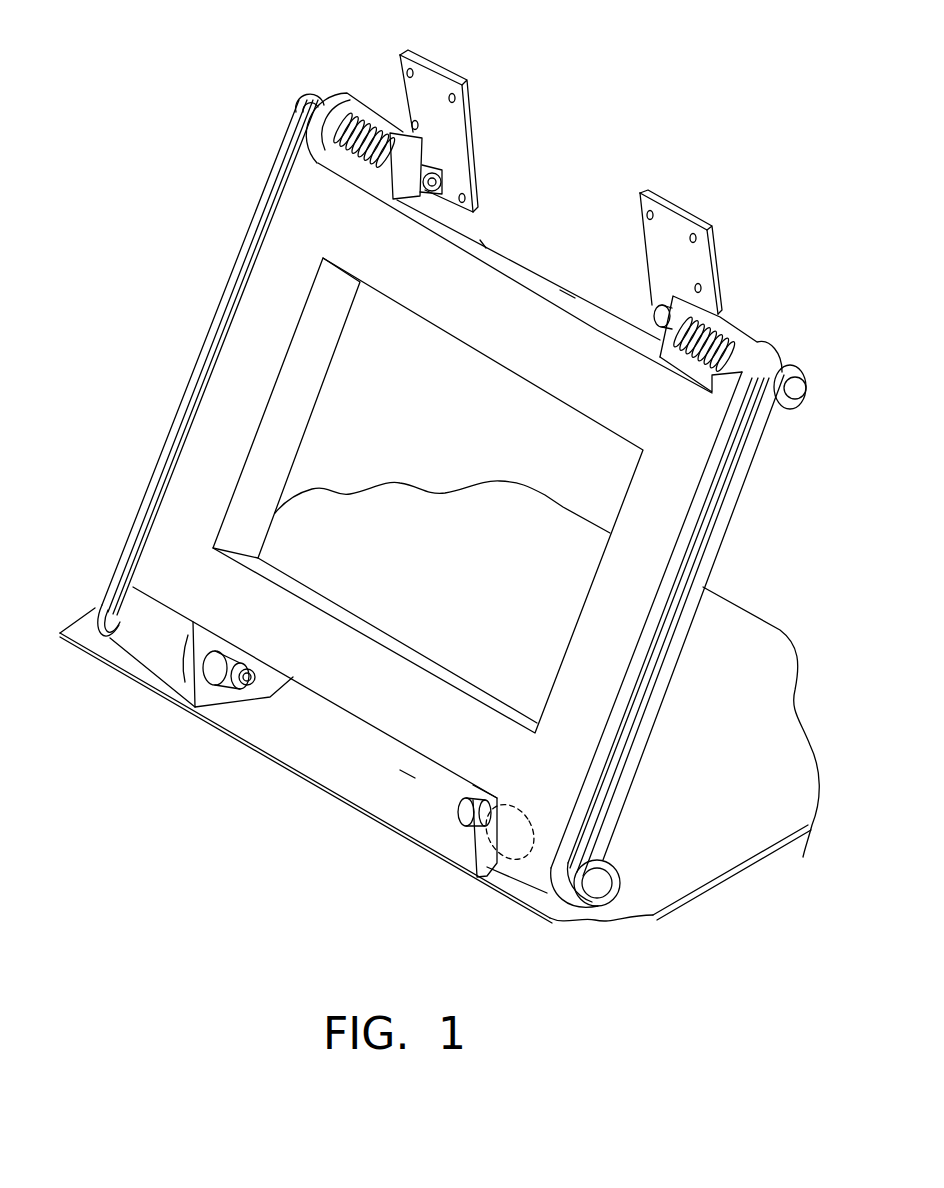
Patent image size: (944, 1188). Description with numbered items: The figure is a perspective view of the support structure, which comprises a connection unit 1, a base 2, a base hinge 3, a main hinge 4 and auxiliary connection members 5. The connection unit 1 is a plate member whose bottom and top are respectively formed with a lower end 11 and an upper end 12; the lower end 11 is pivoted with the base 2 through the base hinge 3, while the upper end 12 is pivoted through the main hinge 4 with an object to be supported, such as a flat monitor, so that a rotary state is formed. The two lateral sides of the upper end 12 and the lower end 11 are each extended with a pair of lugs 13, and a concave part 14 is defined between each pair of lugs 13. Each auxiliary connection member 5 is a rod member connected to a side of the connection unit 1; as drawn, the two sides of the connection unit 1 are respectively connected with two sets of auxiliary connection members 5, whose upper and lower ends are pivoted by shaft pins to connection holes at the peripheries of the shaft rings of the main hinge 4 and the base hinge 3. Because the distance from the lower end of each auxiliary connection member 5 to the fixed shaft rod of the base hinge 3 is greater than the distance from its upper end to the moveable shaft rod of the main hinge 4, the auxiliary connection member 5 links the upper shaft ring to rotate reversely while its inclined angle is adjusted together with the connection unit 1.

The connection unit 1 is at (247, 356).
The base 2 is at (355, 778).
The base hinge 3 is at (243, 697).
The main hinge 4 is at (387, 125).
The auxiliary connection member 5 is at (714, 548).
The lower end 11 is at (300, 717).
The upper end 12 is at (477, 252).
The lugs 13 is at (757, 340).
The concave part 14 is at (568, 267).